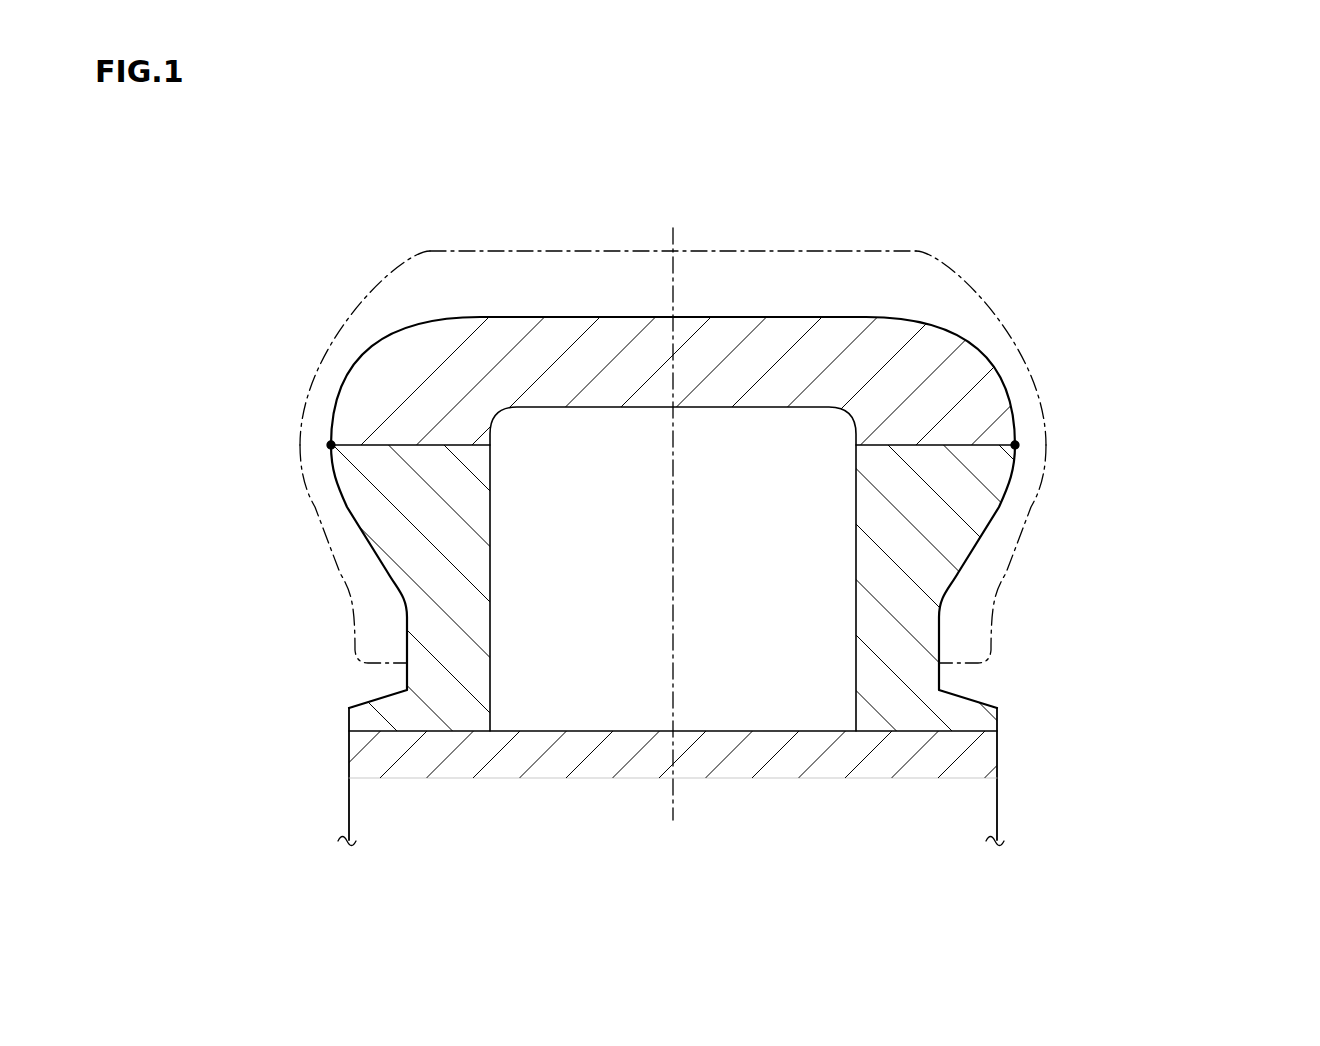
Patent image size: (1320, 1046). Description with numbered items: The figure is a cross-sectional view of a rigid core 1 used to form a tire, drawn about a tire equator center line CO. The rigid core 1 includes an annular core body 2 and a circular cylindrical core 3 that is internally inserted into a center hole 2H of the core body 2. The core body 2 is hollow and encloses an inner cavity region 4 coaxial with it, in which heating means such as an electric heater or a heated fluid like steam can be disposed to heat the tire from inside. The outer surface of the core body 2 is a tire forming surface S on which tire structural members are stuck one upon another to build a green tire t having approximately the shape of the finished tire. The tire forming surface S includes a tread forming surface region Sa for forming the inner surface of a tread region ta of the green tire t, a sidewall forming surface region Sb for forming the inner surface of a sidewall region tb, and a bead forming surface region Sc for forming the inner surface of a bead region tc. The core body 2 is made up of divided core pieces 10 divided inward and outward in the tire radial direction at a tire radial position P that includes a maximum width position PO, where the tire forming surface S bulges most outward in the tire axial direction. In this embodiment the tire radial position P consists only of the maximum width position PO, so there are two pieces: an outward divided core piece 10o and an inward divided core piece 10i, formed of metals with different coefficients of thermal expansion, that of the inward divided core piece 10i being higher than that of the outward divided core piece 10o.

The rigid core 1 is at (1035, 292).
The core body 2 is at (1220, 375).
The circular cylindrical core 3 is at (938, 778).
The inner cavity region 4 is at (727, 553).
The center hole 2H is at (942, 731).
The divided core pieces 10 is at (673, 490).
The outward divided core piece 10o is at (968, 405).
The inward divided core piece 10i is at (968, 497).
The maximum width position PO is at (331, 445).
The tire radial position P is at (673, 445).
The tire forming surface S is at (803, 317).
The tread forming surface region Sa is at (571, 317).
The sidewall forming surface region Sb is at (347, 374).
The bead forming surface region Sc is at (405, 616).
The green tire t is at (730, 251).
The tread region ta is at (512, 251).
The sidewall region tb is at (336, 323).
The bead region tc is at (340, 572).
The tire equator (center line) CO is at (672, 512).